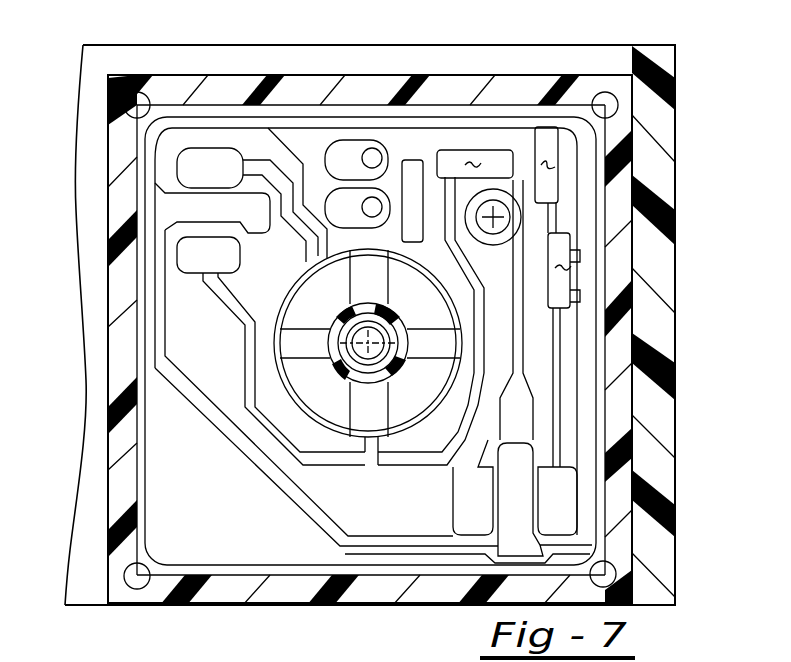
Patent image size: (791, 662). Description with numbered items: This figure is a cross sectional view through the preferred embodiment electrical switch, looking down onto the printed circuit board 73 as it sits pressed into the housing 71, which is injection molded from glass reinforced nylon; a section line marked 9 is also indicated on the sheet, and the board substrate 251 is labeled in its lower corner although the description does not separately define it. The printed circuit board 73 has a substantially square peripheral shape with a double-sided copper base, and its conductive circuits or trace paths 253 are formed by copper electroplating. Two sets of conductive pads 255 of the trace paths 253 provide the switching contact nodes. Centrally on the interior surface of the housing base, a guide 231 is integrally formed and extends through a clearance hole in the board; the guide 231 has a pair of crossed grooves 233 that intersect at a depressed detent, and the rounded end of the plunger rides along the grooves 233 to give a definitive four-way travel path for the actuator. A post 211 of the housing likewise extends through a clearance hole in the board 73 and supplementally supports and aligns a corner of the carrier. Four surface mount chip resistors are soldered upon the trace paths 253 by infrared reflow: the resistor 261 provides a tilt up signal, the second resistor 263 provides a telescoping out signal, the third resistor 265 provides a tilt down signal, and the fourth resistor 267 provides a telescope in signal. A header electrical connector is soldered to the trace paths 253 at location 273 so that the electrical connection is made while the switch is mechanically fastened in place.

The housing 71 is at (618, 335).
The printed circuit board 73 is at (582, 435).
The circuit board substrate 251 is at (224, 521).
The trace paths 253 is at (215, 133).
The pads 255 is at (183, 138).
The crossed grooves 233 is at (355, 277).
The guide 231 is at (310, 300).
The location 273 is at (360, 198).
The resistor 261 is at (411, 204).
The second resistor 263 is at (477, 160).
The post 211 is at (496, 190).
The third resistor 265 is at (545, 165).
The fourth resistor 267 is at (562, 270).
The section line 9- 9 is at (127, 343).